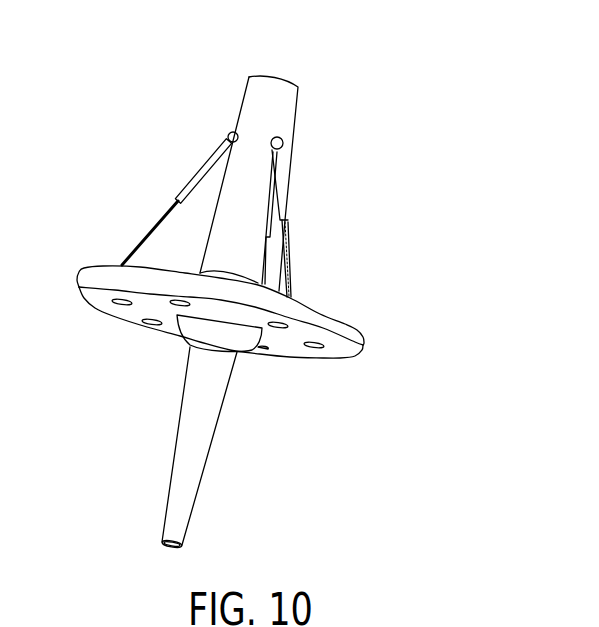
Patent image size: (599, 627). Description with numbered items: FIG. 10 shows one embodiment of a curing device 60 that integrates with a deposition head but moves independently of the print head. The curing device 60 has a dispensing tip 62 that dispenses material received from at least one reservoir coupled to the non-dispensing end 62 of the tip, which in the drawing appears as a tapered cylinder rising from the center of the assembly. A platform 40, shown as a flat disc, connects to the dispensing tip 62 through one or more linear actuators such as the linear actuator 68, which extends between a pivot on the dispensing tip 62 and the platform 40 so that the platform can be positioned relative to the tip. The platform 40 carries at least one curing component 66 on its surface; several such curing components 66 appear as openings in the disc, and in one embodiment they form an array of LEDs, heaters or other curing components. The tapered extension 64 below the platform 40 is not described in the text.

The curing device 60 is at (250, 300).
The dispensing tip 62 is at (298, 87).
The tapered shaft / spike 64 is at (162, 542).
The platform 40 is at (87, 270).
The curing component 66 is at (120, 304).
The linear actuator 68 is at (193, 187).